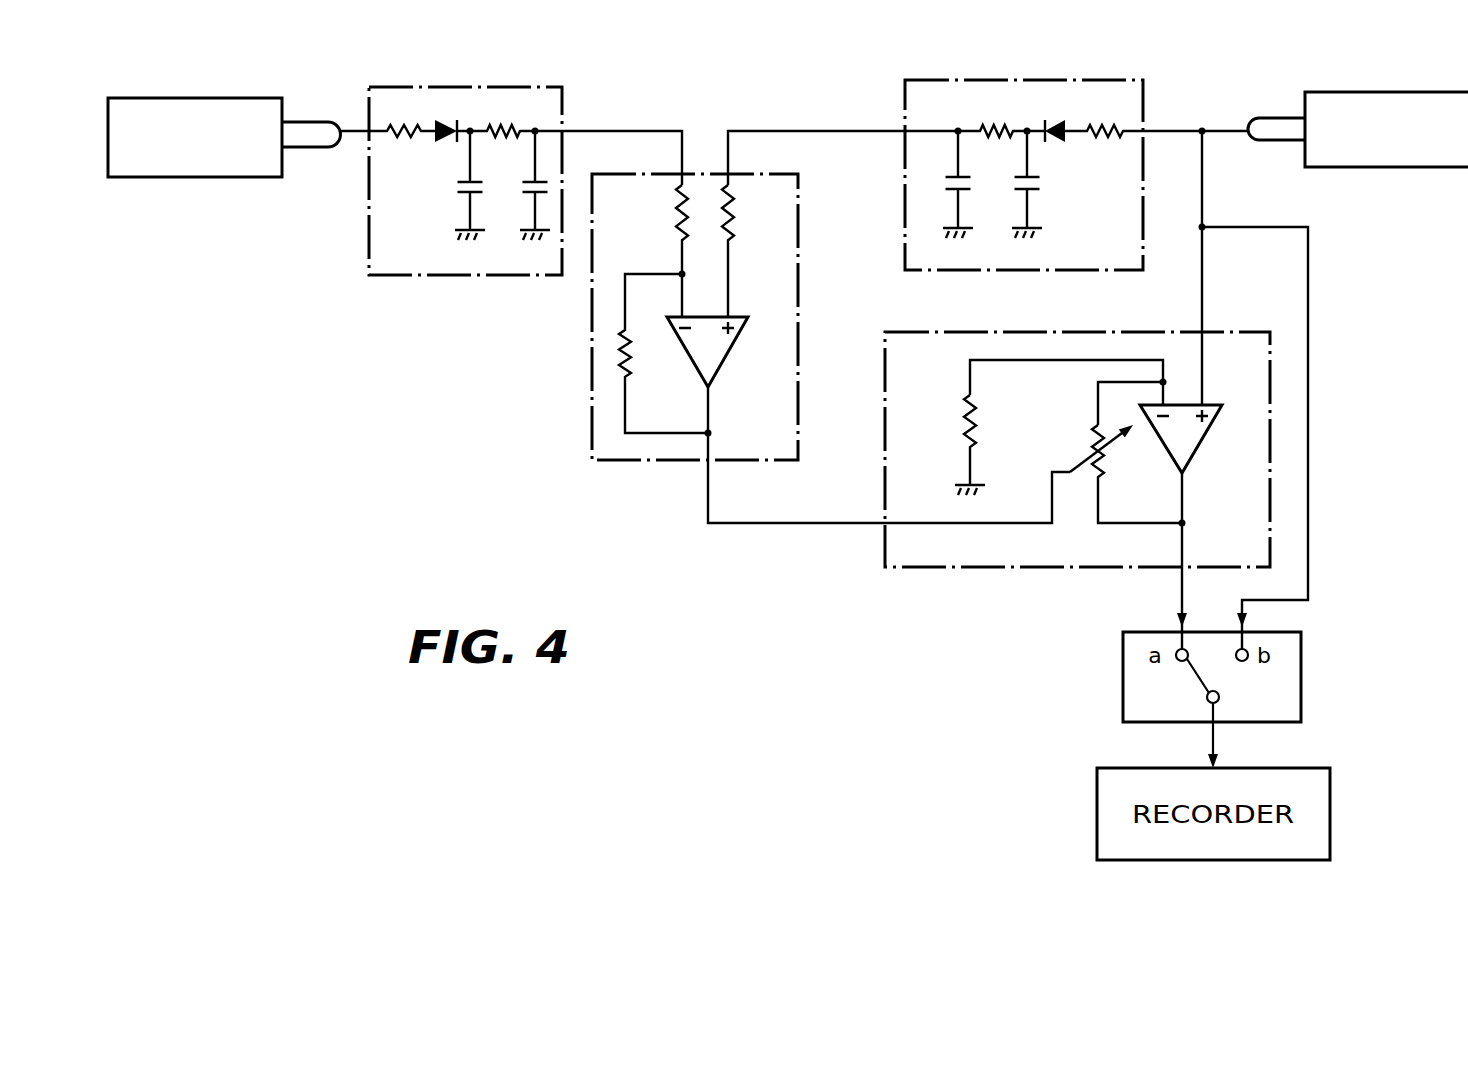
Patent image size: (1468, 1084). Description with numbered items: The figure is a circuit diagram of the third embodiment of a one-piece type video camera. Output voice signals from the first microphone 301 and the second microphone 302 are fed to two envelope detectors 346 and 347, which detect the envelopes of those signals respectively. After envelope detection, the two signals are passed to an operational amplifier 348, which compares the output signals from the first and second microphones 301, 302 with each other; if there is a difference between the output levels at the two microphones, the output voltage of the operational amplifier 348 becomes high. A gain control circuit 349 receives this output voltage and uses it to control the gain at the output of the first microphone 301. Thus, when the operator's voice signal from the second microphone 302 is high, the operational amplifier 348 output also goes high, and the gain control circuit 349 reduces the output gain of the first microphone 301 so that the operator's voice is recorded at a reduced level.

The first microphone 301 is at (1387, 92).
The second microphone 302 is at (241, 97).
The envelope detector 346 is at (968, 78).
The envelope detector 347 is at (420, 85).
The operational amplifier 348 is at (590, 350).
The gain control circuit 349 is at (938, 568).